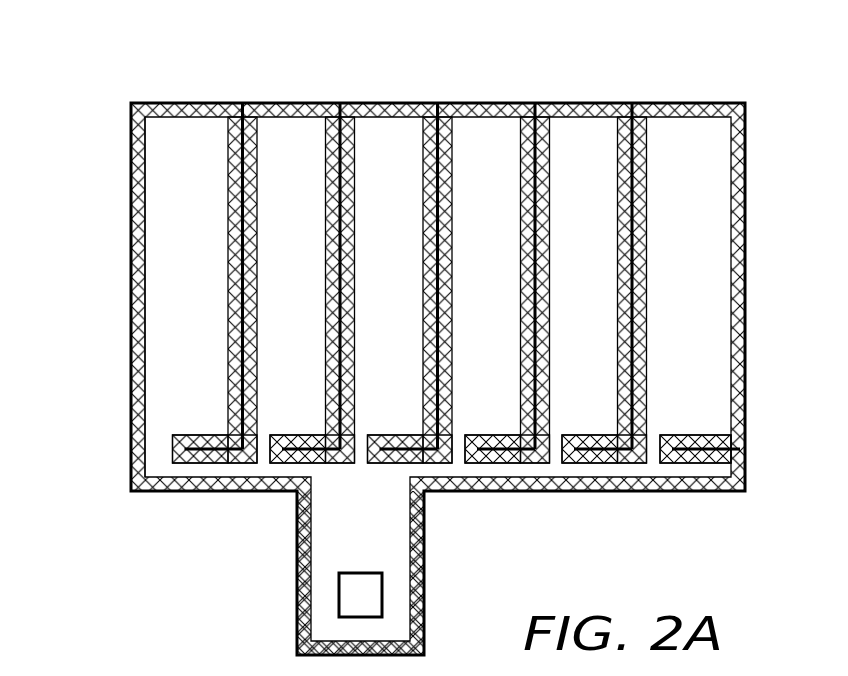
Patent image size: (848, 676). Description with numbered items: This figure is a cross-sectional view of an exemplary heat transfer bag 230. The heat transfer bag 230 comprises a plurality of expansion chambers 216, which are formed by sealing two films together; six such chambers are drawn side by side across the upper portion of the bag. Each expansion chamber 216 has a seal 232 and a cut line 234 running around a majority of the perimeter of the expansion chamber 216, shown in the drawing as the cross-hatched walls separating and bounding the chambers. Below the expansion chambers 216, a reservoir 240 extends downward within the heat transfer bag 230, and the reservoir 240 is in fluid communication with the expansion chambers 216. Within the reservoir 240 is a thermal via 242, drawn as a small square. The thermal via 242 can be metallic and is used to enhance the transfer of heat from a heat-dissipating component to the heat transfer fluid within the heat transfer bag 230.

The heat transfer bag 230 is at (116, 58).
The expansion chambers 216 is at (387, 142).
The seal 232 is at (228, 330).
The cut line 234 is at (508, 461).
The reservoir 240 is at (337, 528).
The thermal via 242 is at (355, 598).